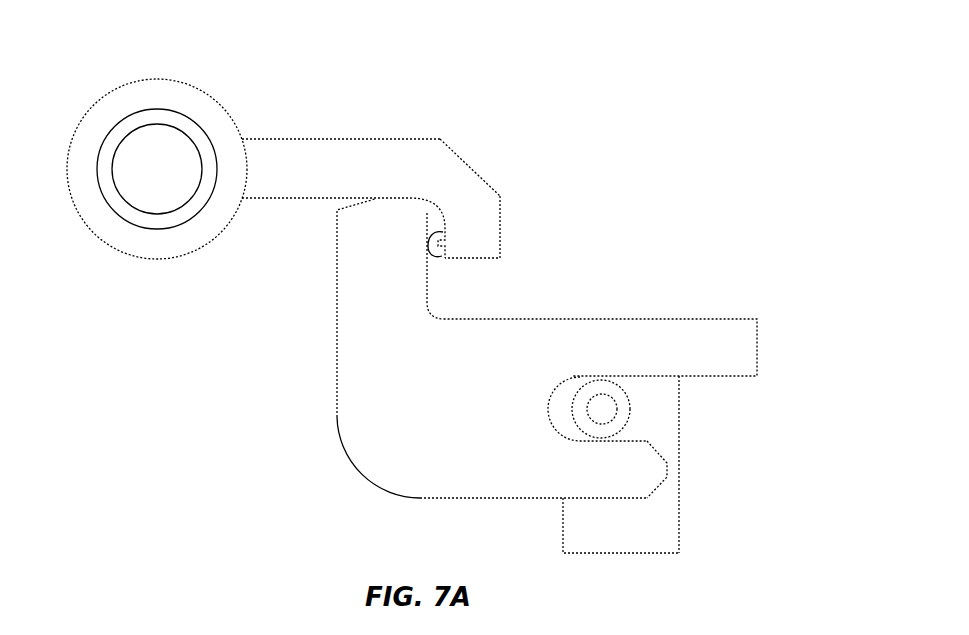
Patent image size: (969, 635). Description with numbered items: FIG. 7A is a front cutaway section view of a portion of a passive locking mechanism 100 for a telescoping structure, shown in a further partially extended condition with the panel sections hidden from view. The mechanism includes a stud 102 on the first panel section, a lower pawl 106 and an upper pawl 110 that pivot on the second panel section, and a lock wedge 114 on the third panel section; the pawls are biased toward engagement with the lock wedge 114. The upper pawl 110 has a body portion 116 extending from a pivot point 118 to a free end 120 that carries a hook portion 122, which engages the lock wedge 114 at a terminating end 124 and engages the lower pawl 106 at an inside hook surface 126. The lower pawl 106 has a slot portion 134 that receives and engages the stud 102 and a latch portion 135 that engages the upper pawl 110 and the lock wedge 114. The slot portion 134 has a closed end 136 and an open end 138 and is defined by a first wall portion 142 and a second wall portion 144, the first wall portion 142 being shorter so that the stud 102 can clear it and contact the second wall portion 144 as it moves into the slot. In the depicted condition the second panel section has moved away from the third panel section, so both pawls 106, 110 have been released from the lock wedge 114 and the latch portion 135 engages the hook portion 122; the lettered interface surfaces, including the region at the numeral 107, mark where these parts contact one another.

The passive locking mechanism 100 is at (760, 93).
The stud 102 is at (603, 410).
The lower pawl 106 is at (343, 457).
The rounded corner 107 is at (436, 216).
The upper pawl 110 is at (267, 139).
The lock wedge 114 is at (660, 538).
The body portion 116 is at (347, 139).
The pivot point 118 is at (157, 170).
The free end 120 is at (521, 146).
The hook portion 122 is at (492, 185).
The terminating end 124 is at (502, 235).
The inside hook surface 126 is at (430, 257).
The slot portion 134 is at (733, 457).
The latch portion 135 is at (320, 240).
The closed end 136 is at (568, 392).
The open end 138 is at (728, 442).
The first wall portion 142 is at (670, 488).
The second wall portion 144 is at (766, 352).